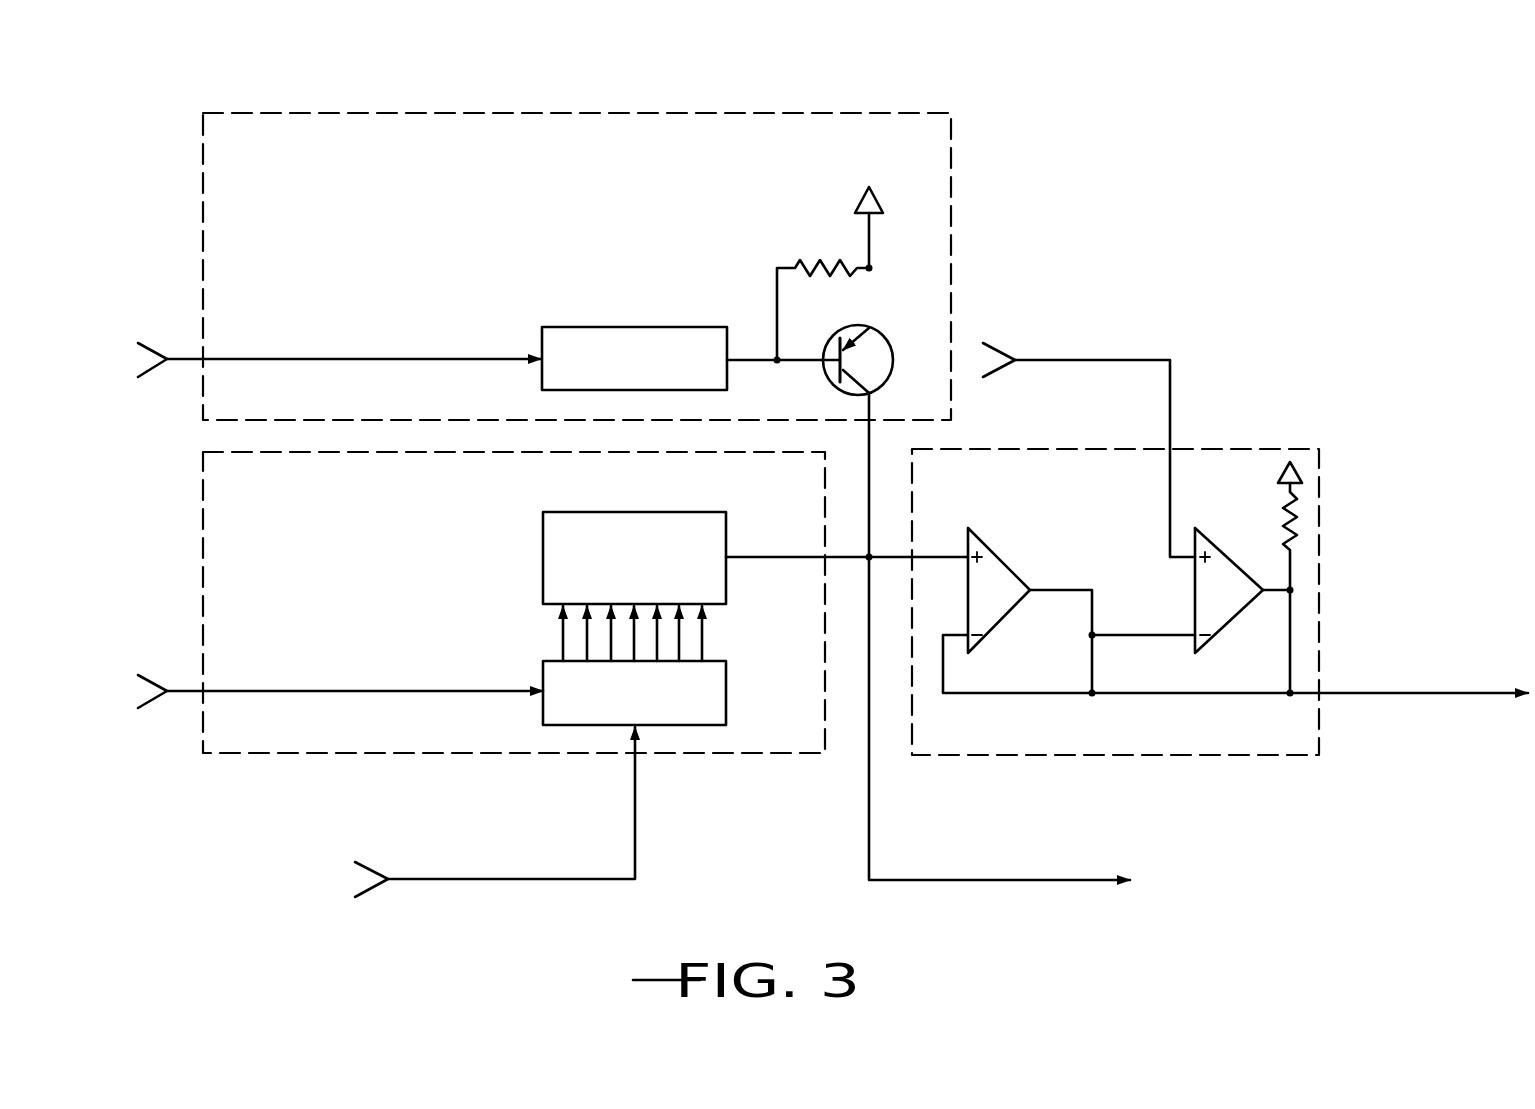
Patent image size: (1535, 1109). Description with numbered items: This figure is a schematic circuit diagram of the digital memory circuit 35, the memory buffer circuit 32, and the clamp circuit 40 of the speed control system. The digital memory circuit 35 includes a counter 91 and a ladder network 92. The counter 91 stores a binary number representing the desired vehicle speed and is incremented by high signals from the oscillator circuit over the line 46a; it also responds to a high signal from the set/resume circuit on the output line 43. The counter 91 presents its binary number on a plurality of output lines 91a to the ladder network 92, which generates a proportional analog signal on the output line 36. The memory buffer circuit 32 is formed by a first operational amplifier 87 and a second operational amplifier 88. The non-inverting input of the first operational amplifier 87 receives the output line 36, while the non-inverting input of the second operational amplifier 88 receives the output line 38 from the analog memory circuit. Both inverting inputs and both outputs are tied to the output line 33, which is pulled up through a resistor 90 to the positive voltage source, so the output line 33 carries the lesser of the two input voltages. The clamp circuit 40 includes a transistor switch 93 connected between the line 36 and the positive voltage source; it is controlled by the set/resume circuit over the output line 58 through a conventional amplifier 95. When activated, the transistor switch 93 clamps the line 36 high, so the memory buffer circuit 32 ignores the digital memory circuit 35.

The memory buffer circuit 32 is at (1302, 449).
The output line 33 is at (1200, 693).
The digital memory circuit 35 is at (272, 753).
The output line 36 is at (790, 557).
The output line 38 is at (1170, 393).
The clamp circuit 40 is at (951, 149).
The output line 43 is at (180, 691).
The line 46a is at (635, 790).
The output line 58 is at (183, 359).
The first operational amplifier 87 is at (1000, 557).
The second operational amplifier 88 is at (1228, 545).
The resistor 90 is at (1297, 530).
The counter 91 is at (726, 700).
The output lines 91a is at (612, 632).
The ladder network 92 is at (726, 532).
The transistor switch 93 is at (893, 355).
The amplifier 95 is at (630, 327).